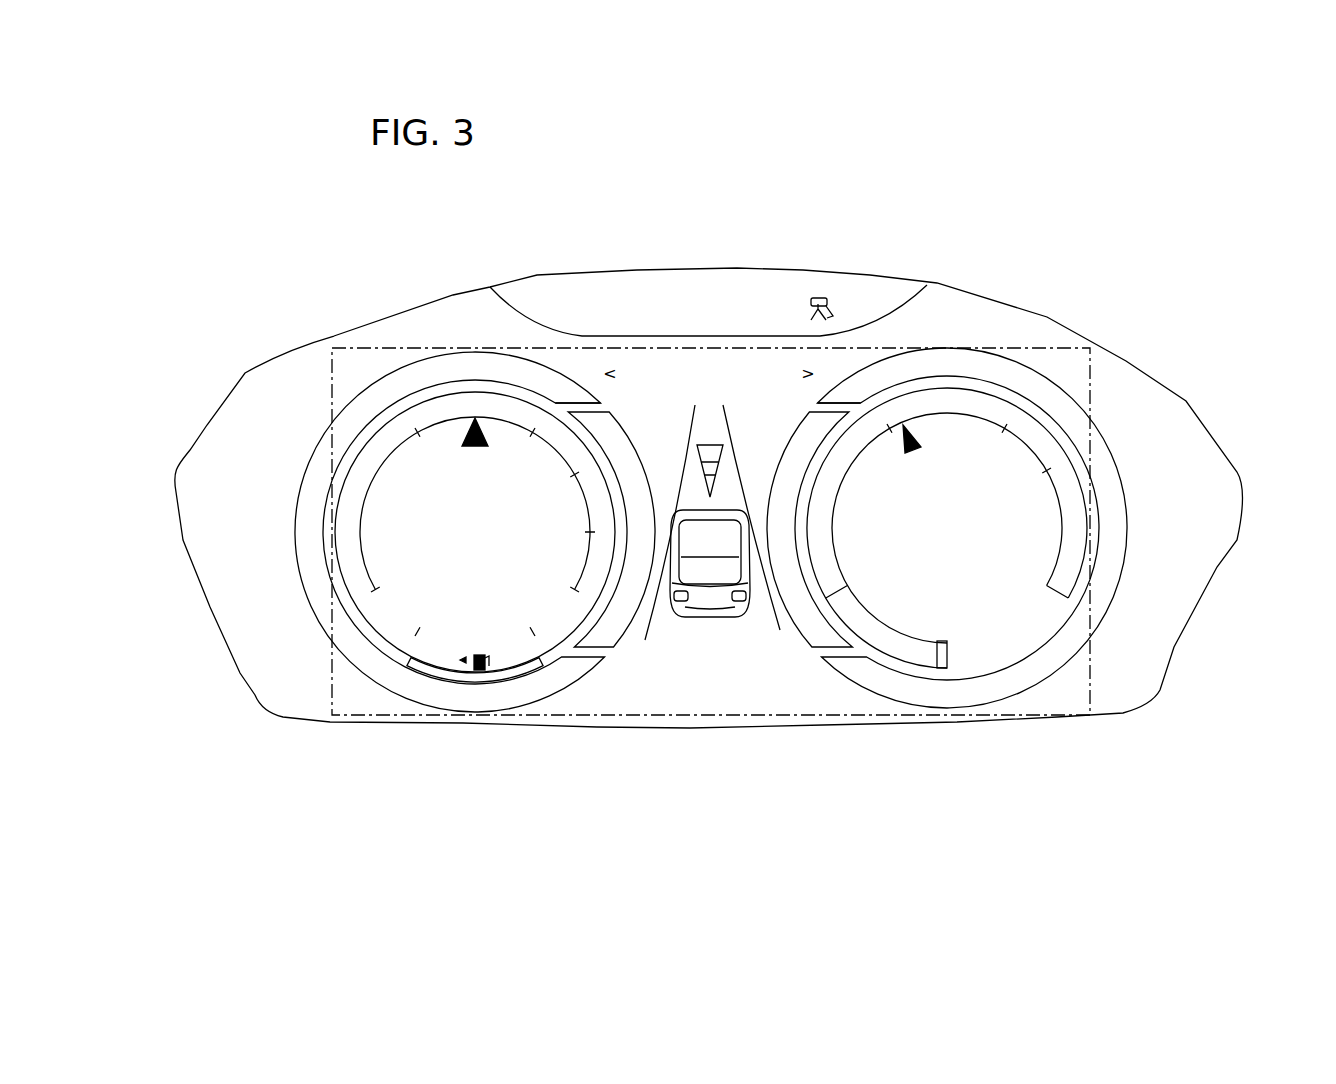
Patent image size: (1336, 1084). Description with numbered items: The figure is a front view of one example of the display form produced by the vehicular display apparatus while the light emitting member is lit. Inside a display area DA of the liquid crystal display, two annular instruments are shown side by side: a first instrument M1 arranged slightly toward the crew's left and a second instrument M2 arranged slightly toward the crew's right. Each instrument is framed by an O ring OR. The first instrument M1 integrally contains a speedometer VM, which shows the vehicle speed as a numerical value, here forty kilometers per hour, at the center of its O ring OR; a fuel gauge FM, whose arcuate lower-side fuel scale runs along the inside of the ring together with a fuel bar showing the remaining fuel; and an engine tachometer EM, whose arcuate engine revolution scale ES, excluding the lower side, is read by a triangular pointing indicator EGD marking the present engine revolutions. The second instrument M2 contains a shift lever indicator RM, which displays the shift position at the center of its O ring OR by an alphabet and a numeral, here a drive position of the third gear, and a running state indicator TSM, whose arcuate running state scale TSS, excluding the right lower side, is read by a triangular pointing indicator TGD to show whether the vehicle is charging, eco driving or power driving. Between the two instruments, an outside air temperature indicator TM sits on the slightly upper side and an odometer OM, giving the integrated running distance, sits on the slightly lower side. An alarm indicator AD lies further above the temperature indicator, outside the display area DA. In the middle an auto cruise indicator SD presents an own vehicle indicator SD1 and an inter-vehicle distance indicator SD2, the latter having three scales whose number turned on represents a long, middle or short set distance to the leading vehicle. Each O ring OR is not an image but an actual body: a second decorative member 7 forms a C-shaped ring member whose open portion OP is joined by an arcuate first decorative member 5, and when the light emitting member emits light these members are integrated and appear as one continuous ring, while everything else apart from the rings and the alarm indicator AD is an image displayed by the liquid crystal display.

The display area DA is at (1092, 655).
The speedometer VM is at (380, 536).
The first instrument M1 is at (530, 347).
The pointing indicator EGD is at (441, 420).
The engine revolution scale ES is at (350, 492).
The engine tachometer EM is at (458, 383).
The fuel gauge FM is at (435, 683).
The O ring OR is at (762, 410).
The first decorative member 5 is at (627, 448).
The second decorative member 7 is at (561, 400).
The open portion OP is at (657, 473).
The outside air temperature indicator TM is at (749, 358).
The alarm indicator AD is at (841, 307).
The auto cruise indicator SD is at (669, 599).
The own vehicle indicator SD1 is at (750, 612).
The inter-vehicle distance indicator SD2 is at (653, 632).
The odometer OM is at (723, 710).
The running state indicator TSM is at (987, 531).
The second instrument M2 is at (951, 340).
The running state scale TSS is at (815, 600).
The pointing indicator TGD is at (903, 440).
The shift lever indicator RM is at (968, 563).